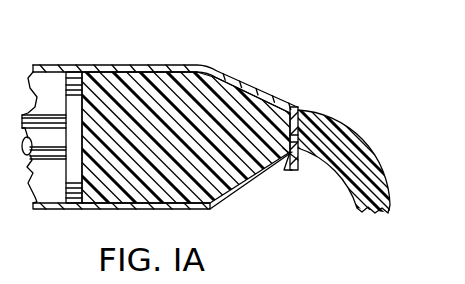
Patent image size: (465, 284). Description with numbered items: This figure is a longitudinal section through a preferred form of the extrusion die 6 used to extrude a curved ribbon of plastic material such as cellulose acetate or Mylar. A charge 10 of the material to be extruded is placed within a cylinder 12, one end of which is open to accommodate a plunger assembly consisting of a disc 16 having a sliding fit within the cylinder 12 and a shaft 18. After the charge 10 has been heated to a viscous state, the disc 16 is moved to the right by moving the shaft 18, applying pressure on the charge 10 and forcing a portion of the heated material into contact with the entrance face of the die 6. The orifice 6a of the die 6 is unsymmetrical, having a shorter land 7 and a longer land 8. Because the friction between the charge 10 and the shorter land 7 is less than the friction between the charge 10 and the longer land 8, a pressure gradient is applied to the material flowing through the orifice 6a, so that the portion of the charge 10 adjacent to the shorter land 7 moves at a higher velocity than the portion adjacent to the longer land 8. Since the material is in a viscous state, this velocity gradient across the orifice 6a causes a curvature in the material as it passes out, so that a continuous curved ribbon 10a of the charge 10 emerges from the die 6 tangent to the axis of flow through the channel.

The charge 10 is at (137, 90).
The ribbon 10a is at (360, 160).
The cylinder 12 is at (218, 71).
The disc 16 is at (73, 77).
The shaft 18 is at (26, 153).
The shorter land 7 is at (292, 112).
The orifice 6a is at (291, 138).
The longer land 8 is at (292, 151).
The extrusion die 6 is at (279, 167).